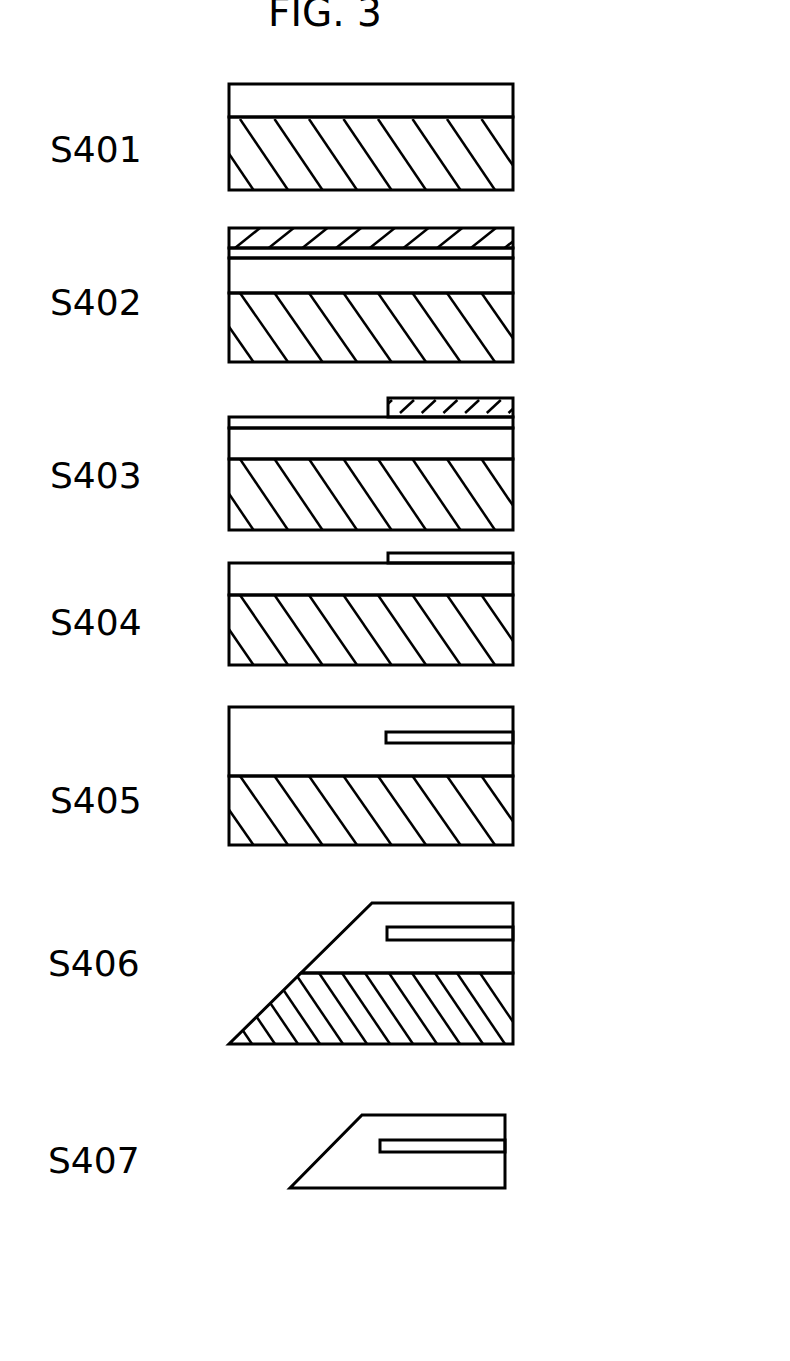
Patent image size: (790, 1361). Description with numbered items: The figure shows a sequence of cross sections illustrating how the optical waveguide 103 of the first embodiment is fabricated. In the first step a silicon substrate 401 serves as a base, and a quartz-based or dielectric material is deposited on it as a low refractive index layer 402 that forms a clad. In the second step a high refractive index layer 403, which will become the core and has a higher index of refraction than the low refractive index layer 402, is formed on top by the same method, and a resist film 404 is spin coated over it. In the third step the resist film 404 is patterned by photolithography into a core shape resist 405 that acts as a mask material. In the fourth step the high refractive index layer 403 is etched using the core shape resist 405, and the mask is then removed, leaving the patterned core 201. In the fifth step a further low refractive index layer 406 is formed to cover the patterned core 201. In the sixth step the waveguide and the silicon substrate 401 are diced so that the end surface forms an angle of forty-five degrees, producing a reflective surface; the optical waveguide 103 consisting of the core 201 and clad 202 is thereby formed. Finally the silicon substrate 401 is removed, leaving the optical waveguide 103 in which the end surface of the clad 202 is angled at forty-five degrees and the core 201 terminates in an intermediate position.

The silicon substrate 401 is at (513, 158).
The low refractive index layer 402 is at (513, 100).
The high refractive index layer 403 is at (513, 252).
The resist film 404 is at (513, 232).
The core shape resist 405 is at (513, 402).
The low refractive index layer 406 is at (473, 718).
The core 201 is at (513, 550).
The clad 202 is at (488, 918).
The optical waveguide 103 is at (473, 1188).